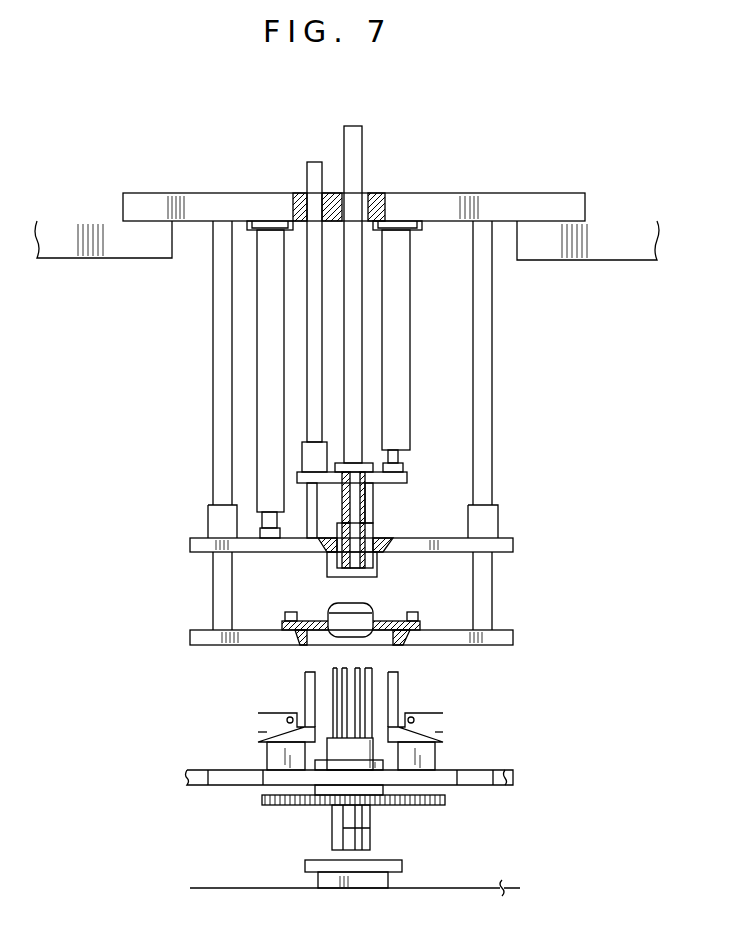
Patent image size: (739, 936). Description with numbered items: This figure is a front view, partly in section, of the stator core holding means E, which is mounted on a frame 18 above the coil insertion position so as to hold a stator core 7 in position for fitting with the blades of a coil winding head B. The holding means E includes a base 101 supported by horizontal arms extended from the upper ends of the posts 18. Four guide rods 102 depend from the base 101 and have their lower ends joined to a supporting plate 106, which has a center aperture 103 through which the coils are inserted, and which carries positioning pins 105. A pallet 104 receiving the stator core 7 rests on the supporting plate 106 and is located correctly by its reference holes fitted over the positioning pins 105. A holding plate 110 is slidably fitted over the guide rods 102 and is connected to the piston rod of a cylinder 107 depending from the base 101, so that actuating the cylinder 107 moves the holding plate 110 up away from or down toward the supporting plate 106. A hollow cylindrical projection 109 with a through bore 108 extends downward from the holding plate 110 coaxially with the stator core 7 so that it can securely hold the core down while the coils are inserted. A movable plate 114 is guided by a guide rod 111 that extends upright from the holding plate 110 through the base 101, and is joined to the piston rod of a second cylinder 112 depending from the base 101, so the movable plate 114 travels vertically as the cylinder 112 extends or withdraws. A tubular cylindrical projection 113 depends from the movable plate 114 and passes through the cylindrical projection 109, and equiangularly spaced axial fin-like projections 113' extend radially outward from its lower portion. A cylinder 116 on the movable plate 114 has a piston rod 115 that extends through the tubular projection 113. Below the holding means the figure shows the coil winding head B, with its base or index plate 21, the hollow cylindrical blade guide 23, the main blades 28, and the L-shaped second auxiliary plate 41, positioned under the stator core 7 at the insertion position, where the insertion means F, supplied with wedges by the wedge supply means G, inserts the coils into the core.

The stator core 7 is at (330, 615).
The frame 18 is at (54, 228).
The base or index plate 21 is at (513, 778).
The blade guide 23 is at (327, 750).
The main blades 28 is at (357, 668).
The second auxiliary plate 41 is at (305, 688).
The base 101 is at (147, 198).
The guide rods 102 is at (218, 297).
The center aperture 103 is at (390, 640).
The pallet 104 is at (390, 625).
The positioning pins 105 is at (288, 616).
The supporting plate 106 is at (513, 638).
The cylinder 107 is at (260, 370).
The through bore 108 is at (372, 563).
The cylindrical projection 109 is at (327, 570).
The holding plate 110 is at (512, 546).
The guide rod 111 is at (308, 172).
The cylinder 112 is at (407, 297).
The cylindrical projection 113 is at (380, 533).
The fin-like projections 113' is at (394, 540).
The movable plate 114 is at (407, 480).
The piston rod 115 is at (353, 490).
The cylinder 116 is at (362, 135).
The stator core holding means E is at (497, 194).
The coil winding head B is at (258, 735).
The wedge supply means G is at (393, 866).
The insertion means F is at (355, 873).